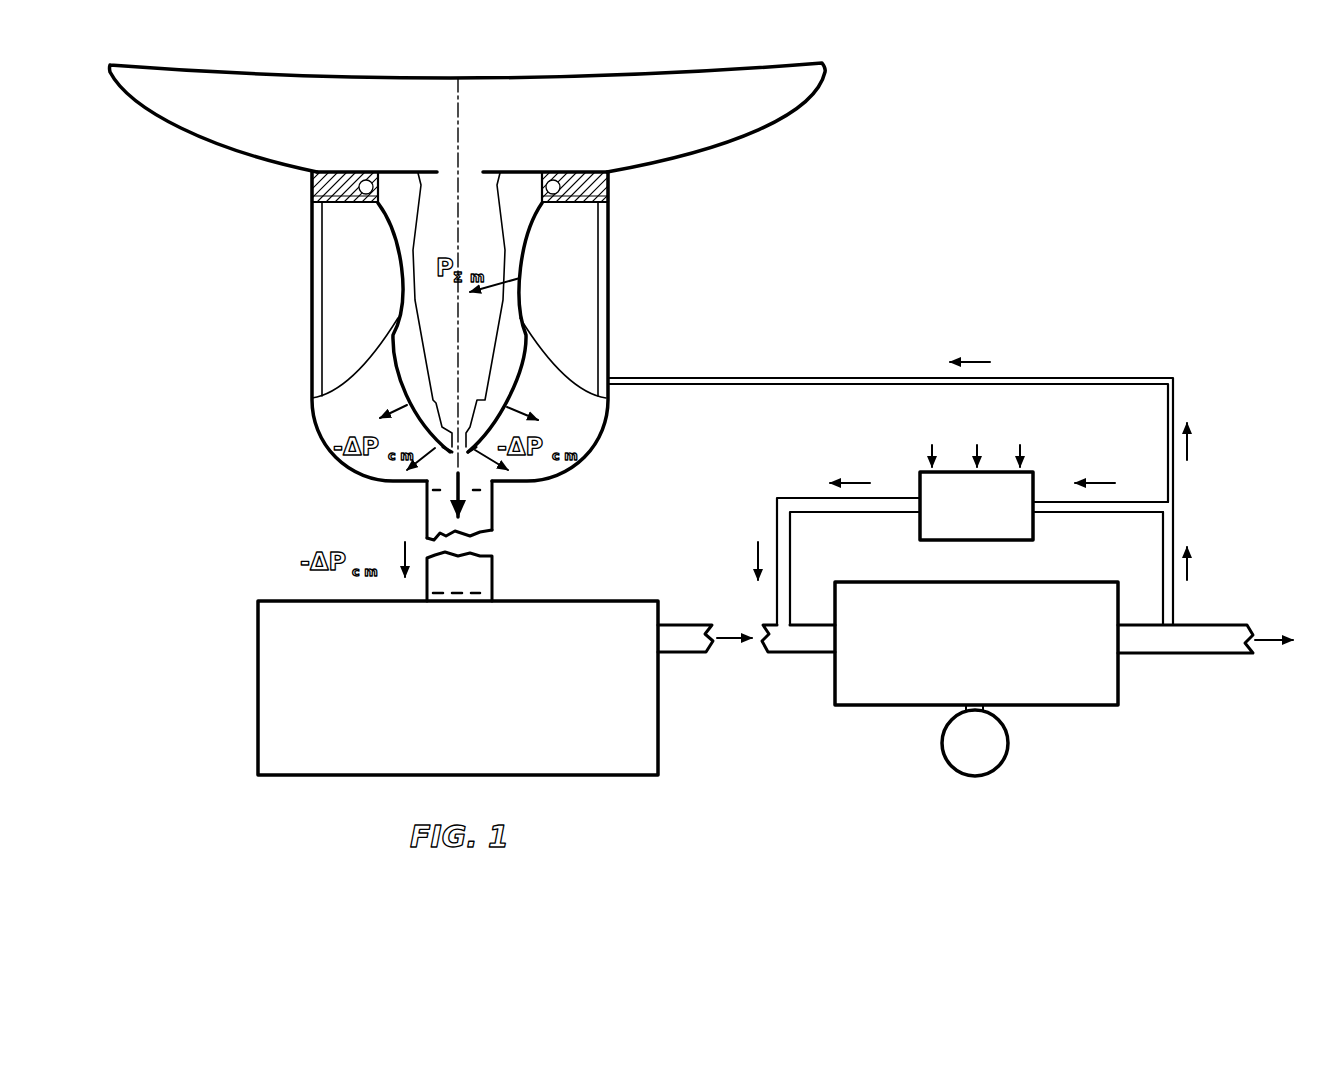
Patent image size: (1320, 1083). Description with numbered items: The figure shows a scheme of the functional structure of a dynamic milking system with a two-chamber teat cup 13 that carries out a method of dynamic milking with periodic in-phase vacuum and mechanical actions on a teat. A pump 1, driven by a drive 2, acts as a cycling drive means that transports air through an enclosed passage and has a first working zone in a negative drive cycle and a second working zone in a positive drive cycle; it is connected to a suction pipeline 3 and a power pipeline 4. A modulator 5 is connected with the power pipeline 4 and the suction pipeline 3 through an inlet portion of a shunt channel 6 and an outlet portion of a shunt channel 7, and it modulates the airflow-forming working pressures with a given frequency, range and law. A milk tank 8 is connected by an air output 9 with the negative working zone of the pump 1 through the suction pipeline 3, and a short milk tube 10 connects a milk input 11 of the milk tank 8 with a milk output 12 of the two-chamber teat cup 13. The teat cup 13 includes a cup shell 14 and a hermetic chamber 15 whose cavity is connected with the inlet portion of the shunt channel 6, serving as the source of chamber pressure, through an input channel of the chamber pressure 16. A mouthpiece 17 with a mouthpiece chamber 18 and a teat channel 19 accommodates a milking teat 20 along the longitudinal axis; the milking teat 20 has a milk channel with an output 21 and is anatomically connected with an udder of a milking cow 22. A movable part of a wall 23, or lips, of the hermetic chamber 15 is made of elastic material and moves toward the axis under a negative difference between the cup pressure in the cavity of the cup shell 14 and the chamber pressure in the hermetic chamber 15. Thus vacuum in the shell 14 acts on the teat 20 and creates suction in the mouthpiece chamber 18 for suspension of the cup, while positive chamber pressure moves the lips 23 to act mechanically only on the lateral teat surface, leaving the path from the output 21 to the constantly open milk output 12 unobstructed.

The pump 1 is at (873, 693).
The drive 2 is at (990, 750).
The suction pipeline 3 is at (777, 642).
The power pipeline 4 is at (1228, 647).
The modulator 5 is at (1017, 525).
The inlet portion of a shunt channel 6 is at (1173, 615).
The outlet portion of a shunt channel 7 is at (777, 513).
The milk tank 8 is at (322, 732).
The air output 9 is at (675, 633).
The short milk tube 10 is at (437, 523).
The milk input 11 is at (477, 590).
The milk output 12 is at (433, 503).
The two-chamber teat cup 13 is at (360, 467).
The cup shell 14 is at (315, 427).
The hermetic chamber 15 is at (350, 280).
The input channel of the chamber pressure 16 is at (633, 376).
The mouthpiece 17 is at (312, 205).
The mouthpiece chamber 18 is at (312, 193).
The teat channel 19 is at (613, 198).
The milking teat 20 is at (522, 223).
The output of the milk channel 21 is at (477, 450).
The udder of a milking cow 22 is at (735, 117).
The movable part of a wall (lips) 23 is at (530, 250).